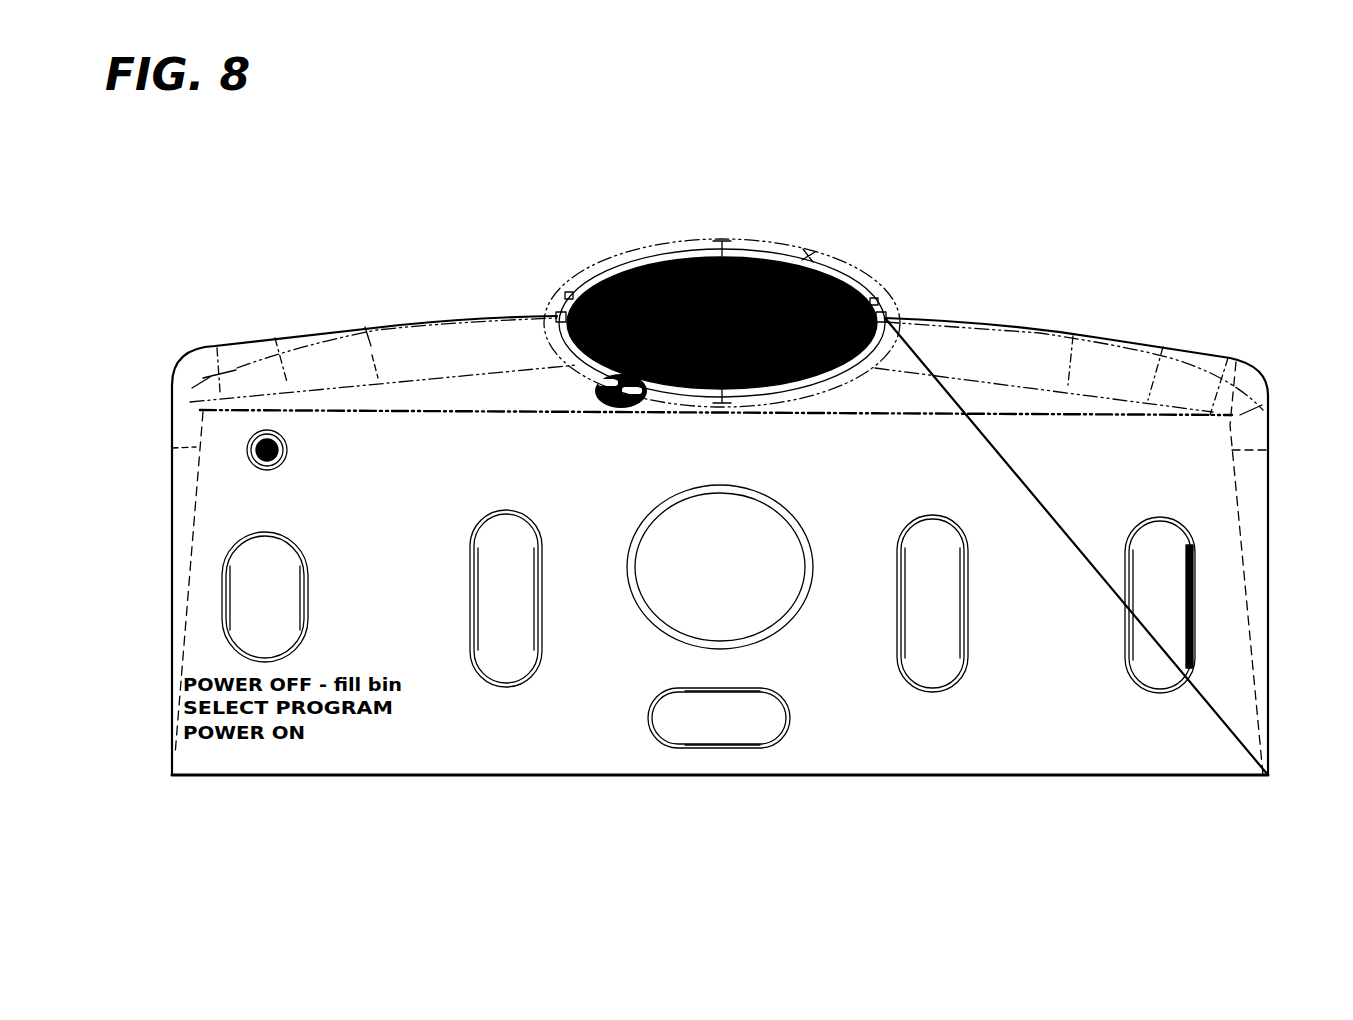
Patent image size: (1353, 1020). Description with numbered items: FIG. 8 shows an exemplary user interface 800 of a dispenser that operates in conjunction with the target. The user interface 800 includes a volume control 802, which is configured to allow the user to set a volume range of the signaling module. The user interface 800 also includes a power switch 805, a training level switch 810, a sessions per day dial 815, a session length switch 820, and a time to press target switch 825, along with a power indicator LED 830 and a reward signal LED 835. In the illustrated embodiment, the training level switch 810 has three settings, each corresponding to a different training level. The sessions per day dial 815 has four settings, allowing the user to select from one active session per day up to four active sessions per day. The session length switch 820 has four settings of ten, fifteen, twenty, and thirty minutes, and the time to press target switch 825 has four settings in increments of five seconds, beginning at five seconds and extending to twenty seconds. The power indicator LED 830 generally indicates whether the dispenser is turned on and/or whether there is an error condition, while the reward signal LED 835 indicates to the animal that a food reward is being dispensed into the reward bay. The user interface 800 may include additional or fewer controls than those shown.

The user interface 800 is at (1258, 146).
The volume control 802 is at (758, 690).
The power switch 805 is at (308, 562).
The training level switch 810 is at (506, 688).
The sessions per day dial 815 is at (648, 612).
The session length switch 820 is at (945, 690).
The time to press target switch 825 is at (1125, 668).
The power indicator LED 830 is at (284, 458).
The reward signal LED 835 is at (632, 272).